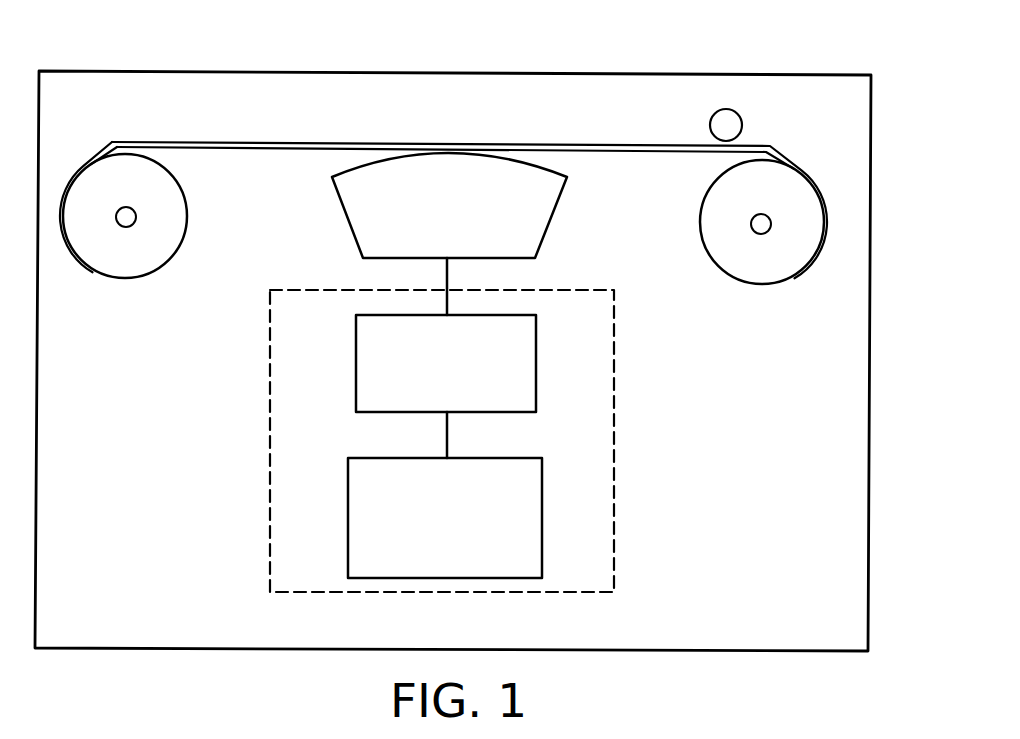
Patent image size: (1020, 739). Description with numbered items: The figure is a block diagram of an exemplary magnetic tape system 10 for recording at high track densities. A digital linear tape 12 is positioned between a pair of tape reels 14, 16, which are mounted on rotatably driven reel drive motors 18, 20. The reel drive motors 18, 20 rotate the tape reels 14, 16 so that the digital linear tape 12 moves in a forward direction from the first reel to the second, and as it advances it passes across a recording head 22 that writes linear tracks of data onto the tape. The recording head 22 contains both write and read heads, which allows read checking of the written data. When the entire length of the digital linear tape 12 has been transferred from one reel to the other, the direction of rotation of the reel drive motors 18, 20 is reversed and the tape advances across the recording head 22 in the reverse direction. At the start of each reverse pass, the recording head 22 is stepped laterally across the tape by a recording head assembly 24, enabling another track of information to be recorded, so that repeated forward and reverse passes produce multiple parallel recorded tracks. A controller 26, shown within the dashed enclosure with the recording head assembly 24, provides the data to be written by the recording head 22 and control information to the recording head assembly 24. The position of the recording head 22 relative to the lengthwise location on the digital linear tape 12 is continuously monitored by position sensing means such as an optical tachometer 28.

The magnetic tape system 10 is at (809, 75).
The digital linear tape 12 is at (618, 143).
The tape reel 14 is at (103, 279).
The tape reel 16 is at (747, 284).
The reel drive motor 18 is at (134, 223).
The reel drive motor 20 is at (767, 229).
The recording head 22 is at (553, 213).
The recording head assembly 24 is at (536, 358).
The controller 26 is at (542, 518).
The optical tachometer 28 is at (741, 118).